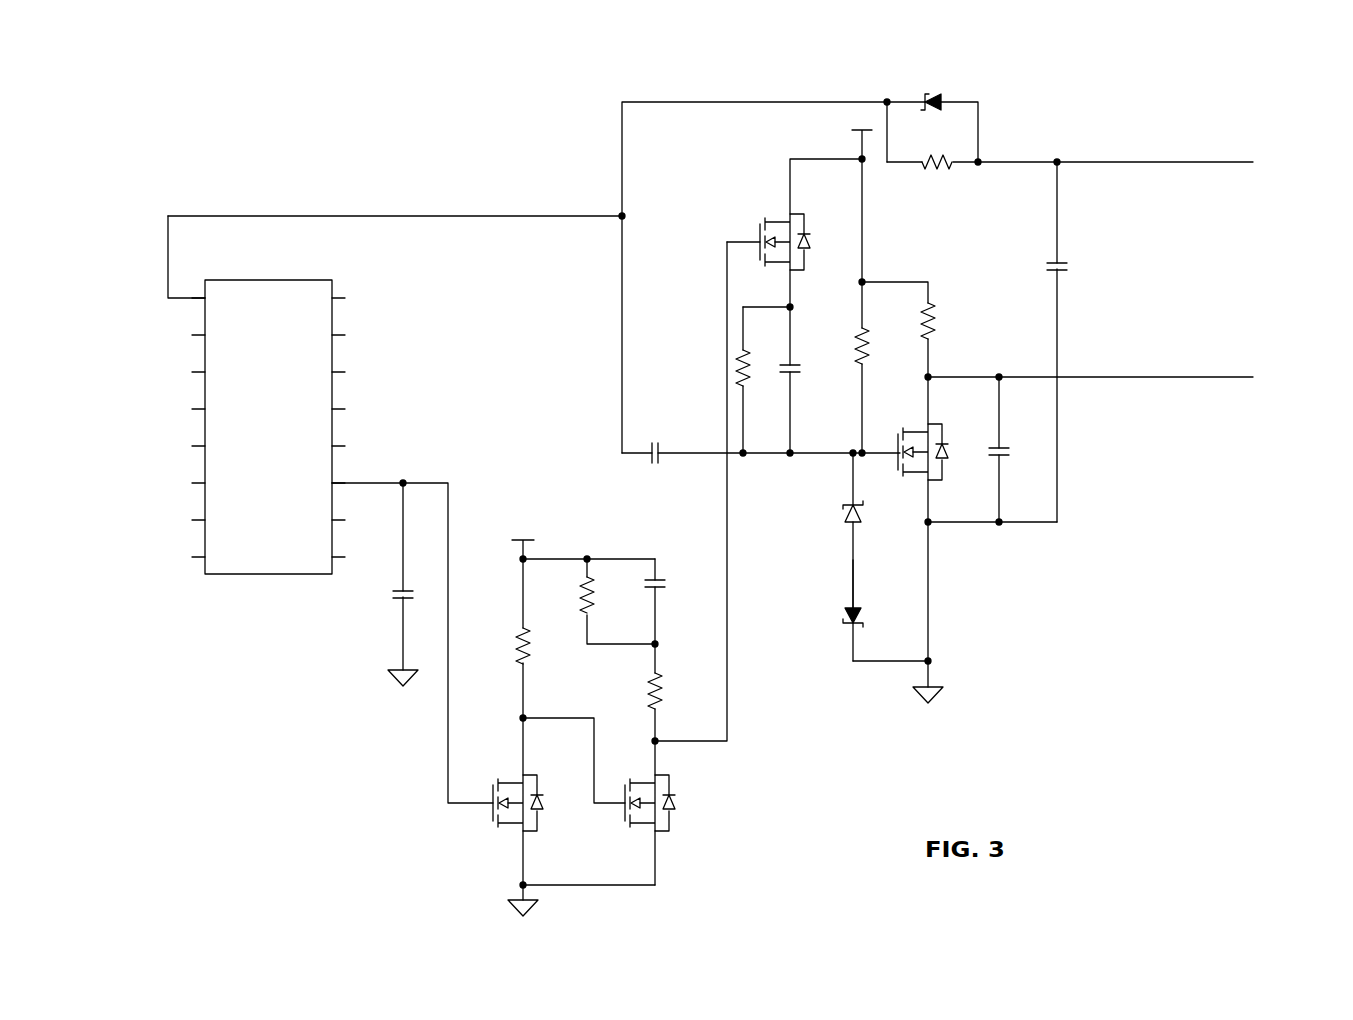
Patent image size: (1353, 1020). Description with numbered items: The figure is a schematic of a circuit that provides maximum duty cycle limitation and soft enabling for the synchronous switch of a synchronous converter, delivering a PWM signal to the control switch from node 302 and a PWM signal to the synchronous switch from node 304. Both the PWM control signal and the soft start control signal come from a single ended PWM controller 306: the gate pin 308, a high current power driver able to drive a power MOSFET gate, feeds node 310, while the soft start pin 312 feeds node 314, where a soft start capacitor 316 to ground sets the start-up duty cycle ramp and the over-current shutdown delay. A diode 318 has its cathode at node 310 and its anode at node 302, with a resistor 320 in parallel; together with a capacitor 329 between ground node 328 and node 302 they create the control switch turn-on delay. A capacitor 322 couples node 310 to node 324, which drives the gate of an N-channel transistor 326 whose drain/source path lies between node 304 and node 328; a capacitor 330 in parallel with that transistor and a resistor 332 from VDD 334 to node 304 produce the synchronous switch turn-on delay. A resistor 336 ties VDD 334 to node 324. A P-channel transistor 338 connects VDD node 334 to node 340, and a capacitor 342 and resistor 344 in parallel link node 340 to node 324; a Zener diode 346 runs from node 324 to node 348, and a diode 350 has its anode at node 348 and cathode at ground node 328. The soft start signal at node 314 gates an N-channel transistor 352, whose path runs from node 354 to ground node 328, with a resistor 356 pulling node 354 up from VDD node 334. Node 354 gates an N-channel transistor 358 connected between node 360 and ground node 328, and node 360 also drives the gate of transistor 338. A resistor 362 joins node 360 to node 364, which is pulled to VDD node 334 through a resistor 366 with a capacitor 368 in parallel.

The node 302 is at (1252, 162).
The node 304 is at (1253, 378).
The single ended PWM controller 306 is at (240, 574).
The gate pin 308 is at (190, 303).
The node 310 is at (621, 213).
The soft start pin 312 is at (337, 480).
The node 314 is at (448, 488).
The soft start capacitor 316 is at (400, 594).
The diode 318 is at (945, 96).
The resistor 320 is at (930, 168).
The capacitor 322 is at (660, 452).
The node 324 is at (792, 455).
The N-channel transistor 326 is at (928, 423).
The ground node 328 is at (620, 885).
The capacitor 329 is at (1064, 266).
The capacitor 330 is at (1010, 451).
The resistor 332 is at (930, 322).
The VDD node 334 is at (861, 158).
The resistor 336 is at (861, 335).
The P-channel transistor 338 is at (758, 222).
The node 340 is at (789, 307).
The capacitor 342 is at (792, 372).
The resistor 344 is at (742, 368).
The Zener diode 346 is at (848, 520).
The node 348 is at (852, 588).
The diode 350 is at (845, 628).
The N-channel transistor 352 is at (490, 828).
The node 354 is at (522, 718).
The resistor 356 is at (522, 635).
The N-channel transistor 358 is at (677, 785).
The node 360 is at (654, 741).
The resistor 362 is at (655, 695).
The node 364 is at (658, 644).
The resistor 366 is at (586, 610).
The capacitor 368 is at (660, 582).